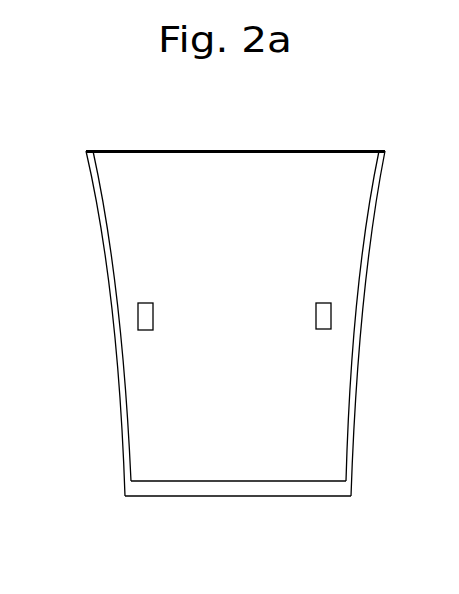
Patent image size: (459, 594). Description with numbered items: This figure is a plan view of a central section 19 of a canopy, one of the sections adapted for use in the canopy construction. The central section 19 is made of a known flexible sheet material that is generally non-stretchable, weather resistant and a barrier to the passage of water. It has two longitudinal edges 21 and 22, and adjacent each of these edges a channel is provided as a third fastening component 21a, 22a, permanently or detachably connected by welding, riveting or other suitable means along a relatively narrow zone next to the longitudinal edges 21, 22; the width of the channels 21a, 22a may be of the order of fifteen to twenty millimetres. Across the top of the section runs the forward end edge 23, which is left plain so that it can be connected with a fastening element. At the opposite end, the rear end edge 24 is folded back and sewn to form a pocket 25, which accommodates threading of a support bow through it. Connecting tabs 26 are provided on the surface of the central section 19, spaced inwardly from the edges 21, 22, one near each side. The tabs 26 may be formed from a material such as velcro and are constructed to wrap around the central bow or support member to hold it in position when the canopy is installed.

The central section 19 is at (242, 276).
The longitudinal edge 21 is at (110, 295).
The third fastening component channel 21a is at (85, 150).
The longitudinal edge 22 is at (363, 295).
The third fastening component channel 22a is at (384, 150).
The forward end edge 23 is at (233, 151).
The rear end edge 24 is at (283, 497).
The pocket 25 is at (183, 487).
The connecting tabs 26 is at (138, 323).